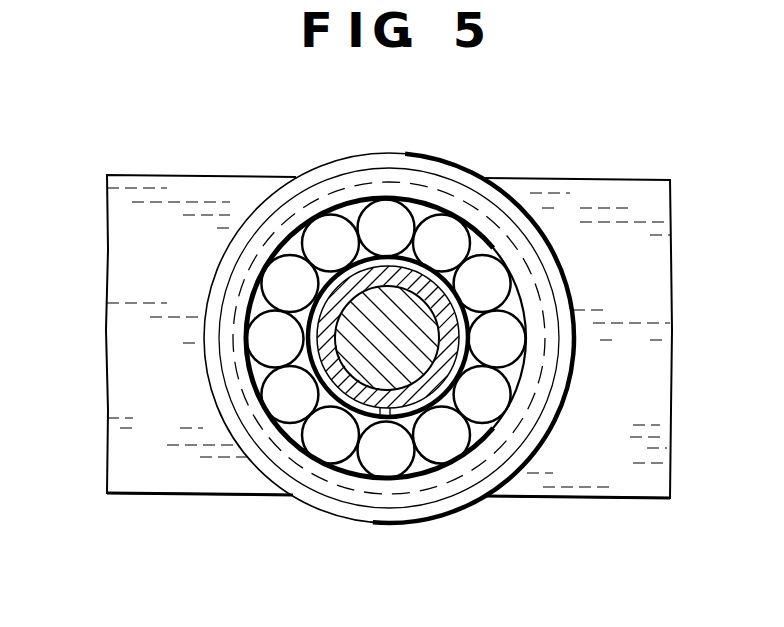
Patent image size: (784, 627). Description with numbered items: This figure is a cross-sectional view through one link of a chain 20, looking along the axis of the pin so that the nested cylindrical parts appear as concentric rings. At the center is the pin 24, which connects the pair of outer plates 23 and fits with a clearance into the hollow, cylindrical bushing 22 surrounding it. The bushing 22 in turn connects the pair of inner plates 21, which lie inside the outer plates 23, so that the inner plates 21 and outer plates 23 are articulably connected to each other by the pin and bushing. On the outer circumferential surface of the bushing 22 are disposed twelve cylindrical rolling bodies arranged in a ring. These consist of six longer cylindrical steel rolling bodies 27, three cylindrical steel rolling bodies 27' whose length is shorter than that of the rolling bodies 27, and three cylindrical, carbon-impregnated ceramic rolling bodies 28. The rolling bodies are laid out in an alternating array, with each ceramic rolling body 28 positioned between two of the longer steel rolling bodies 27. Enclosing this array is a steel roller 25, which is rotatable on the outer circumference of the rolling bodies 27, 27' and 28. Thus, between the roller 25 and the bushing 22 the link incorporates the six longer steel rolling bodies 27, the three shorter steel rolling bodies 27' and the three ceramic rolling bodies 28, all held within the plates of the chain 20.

The chain 20 is at (118, 156).
The inner plates 21 is at (187, 176).
The bushing 22 is at (365, 400).
The outer plates 23 is at (600, 180).
The pin 24 is at (410, 377).
The steel roller 25 is at (354, 154).
The cylindrical steel rolling bodies 27 is at (389, 347).
The cylindrical steel rolling bodies 27' is at (385, 410).
The carbon-impregnated ceramic rolling bodies 28 is at (392, 210).